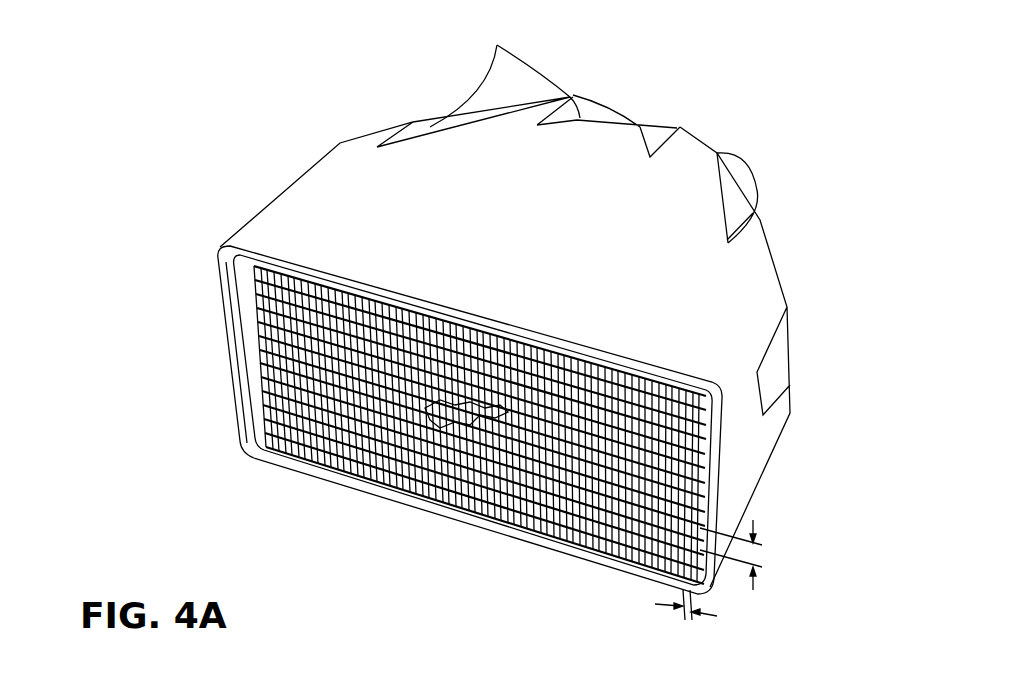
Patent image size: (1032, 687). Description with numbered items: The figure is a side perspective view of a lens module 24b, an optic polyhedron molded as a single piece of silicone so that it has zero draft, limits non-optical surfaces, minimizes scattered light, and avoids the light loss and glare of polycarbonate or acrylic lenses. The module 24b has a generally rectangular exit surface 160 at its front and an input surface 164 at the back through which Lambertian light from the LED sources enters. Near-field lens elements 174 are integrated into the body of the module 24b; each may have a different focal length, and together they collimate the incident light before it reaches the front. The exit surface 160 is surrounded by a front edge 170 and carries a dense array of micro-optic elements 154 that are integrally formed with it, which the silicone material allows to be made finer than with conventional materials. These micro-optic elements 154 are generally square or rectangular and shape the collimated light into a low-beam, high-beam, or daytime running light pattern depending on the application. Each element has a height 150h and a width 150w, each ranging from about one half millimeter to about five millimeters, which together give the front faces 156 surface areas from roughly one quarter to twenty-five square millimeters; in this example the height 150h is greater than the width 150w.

The second lens module 24b is at (215, 98).
The micro-optic elements 154 is at (262, 350).
The front faces 156 is at (440, 482).
The exit surface 160 is at (307, 463).
The input surface 164 is at (650, 148).
The front edge 170 is at (230, 307).
The near-field lens elements 174 is at (497, 45).
The height 150h is at (753, 520).
The width 150w is at (707, 620).